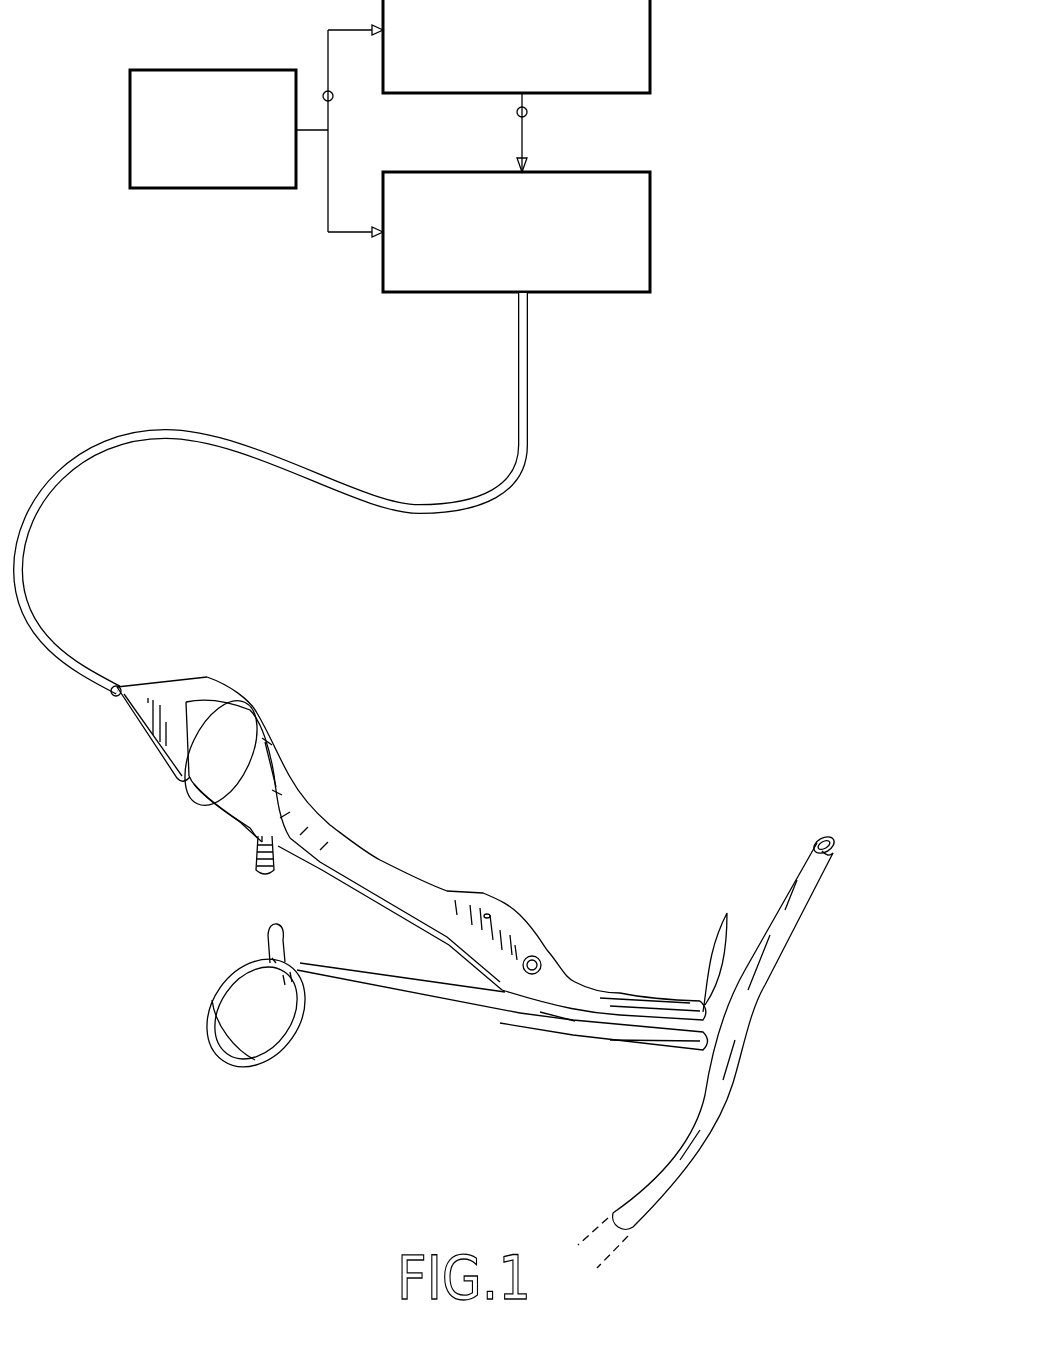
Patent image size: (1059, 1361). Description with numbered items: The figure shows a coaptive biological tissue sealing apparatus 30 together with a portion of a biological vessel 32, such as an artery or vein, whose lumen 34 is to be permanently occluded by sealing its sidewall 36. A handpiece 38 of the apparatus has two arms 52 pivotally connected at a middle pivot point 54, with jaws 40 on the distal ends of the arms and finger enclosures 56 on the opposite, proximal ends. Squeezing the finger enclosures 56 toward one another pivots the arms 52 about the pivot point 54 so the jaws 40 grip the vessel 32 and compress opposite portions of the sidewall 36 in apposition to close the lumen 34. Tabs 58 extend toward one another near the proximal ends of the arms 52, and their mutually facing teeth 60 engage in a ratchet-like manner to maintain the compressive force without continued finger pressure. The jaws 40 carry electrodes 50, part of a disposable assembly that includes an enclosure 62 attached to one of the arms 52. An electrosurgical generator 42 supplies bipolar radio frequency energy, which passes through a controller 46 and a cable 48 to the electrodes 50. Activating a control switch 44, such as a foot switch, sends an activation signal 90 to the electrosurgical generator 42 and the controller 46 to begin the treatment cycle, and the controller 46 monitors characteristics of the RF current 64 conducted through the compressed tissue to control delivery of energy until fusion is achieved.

The coaptive biological tissue sealing apparatus 30 is at (590, 672).
The biological vessel 32 is at (749, 1003).
The lumen 34 is at (823, 837).
The sidewall 36 is at (837, 853).
The handpiece 38 is at (420, 862).
The jaws 40 is at (648, 1003).
The electrosurgical generator 42 is at (650, 44).
The control switch 44 is at (128, 90).
The controller 46 is at (650, 217).
The cable 48 is at (521, 427).
The electrodes 50 is at (728, 916).
The arms 52 is at (367, 866).
The pivot point 54 is at (543, 958).
The finger enclosures 56 is at (186, 787).
The tabs 58 is at (257, 852).
The teeth 60 is at (277, 870).
The enclosure 62 is at (176, 690).
The RF current 64 is at (527, 115).
The activation signal 90 is at (333, 99).